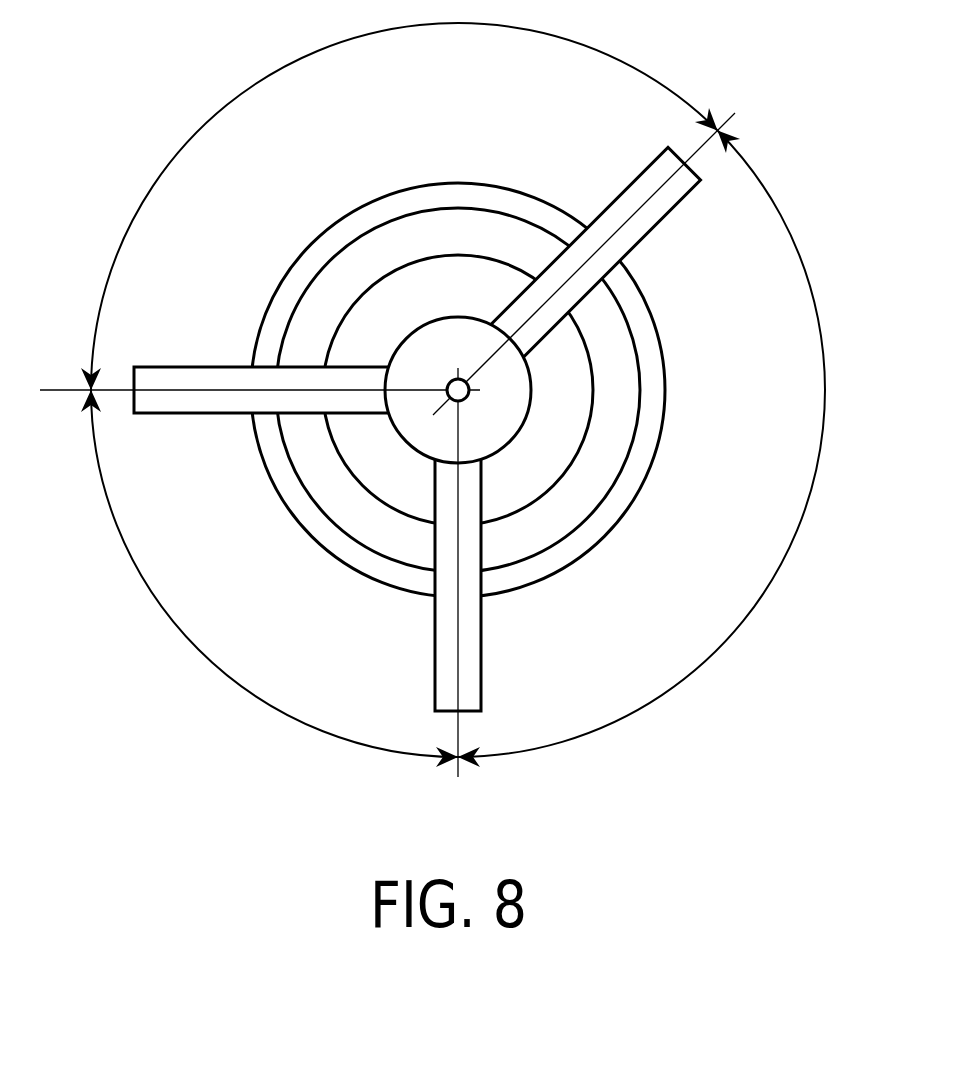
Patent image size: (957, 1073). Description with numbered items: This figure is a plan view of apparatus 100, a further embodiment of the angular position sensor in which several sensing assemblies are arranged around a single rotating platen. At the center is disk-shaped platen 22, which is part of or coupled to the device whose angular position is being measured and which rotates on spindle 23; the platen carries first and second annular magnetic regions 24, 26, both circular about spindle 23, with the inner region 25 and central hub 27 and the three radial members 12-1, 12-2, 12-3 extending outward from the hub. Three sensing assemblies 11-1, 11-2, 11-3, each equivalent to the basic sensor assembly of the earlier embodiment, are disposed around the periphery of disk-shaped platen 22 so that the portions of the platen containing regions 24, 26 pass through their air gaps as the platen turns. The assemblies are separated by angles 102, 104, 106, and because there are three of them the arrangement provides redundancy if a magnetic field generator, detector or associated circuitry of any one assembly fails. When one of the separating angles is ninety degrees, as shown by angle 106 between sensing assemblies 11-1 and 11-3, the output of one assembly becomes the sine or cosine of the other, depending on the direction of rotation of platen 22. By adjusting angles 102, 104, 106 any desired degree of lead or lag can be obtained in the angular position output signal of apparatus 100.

The apparatus 100 is at (455, 421).
The angle 102 is at (152, 183).
The angle 104 is at (820, 453).
The angle 106 is at (223, 680).
The sensing assembly 11-1 is at (207, 338).
The sensing assembly 11-2 is at (577, 170).
The sensing assembly 11-3 is at (546, 628).
The first radial arm 12-1 is at (197, 414).
The second radial arm 12-2 is at (657, 228).
The third radial arm 12-3 is at (433, 637).
The disk-shaped platen 22 is at (322, 232).
The spindle 23 is at (462, 398).
The first annular magnetic region 24 is at (472, 208).
The second annular region 25 is at (467, 249).
The second annular magnetic region 26 is at (467, 306).
The central hub 27 is at (443, 372).